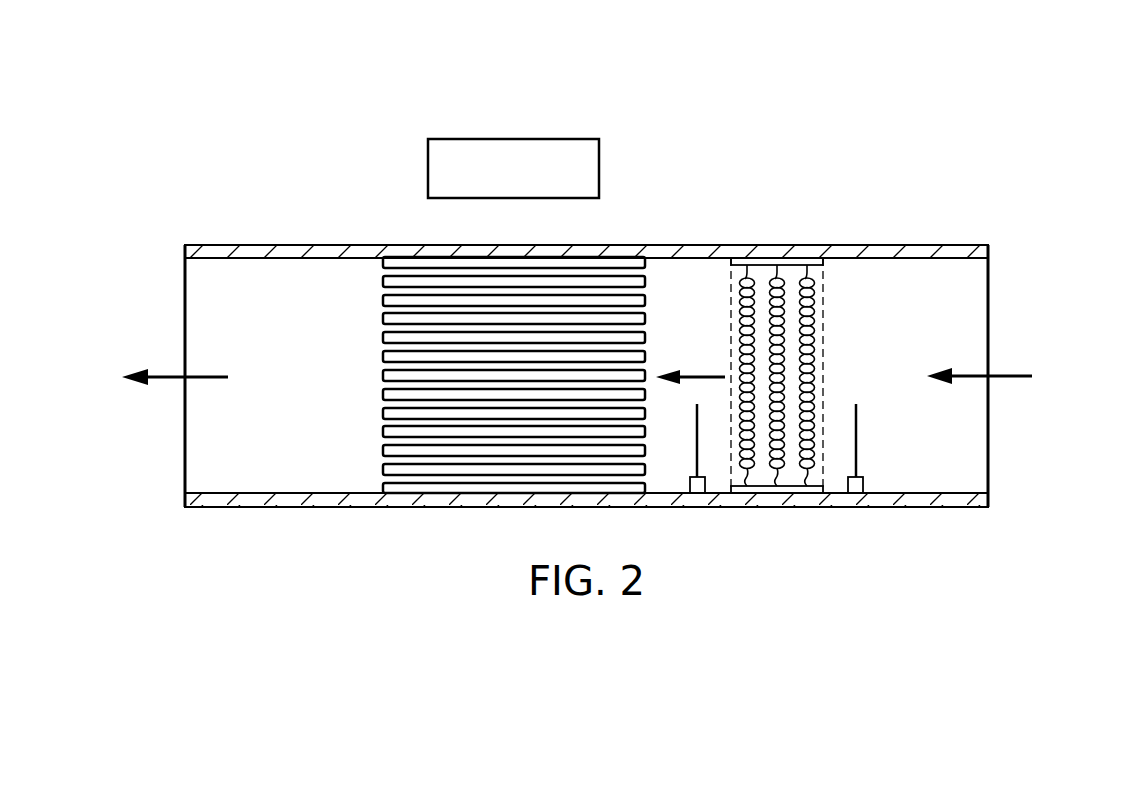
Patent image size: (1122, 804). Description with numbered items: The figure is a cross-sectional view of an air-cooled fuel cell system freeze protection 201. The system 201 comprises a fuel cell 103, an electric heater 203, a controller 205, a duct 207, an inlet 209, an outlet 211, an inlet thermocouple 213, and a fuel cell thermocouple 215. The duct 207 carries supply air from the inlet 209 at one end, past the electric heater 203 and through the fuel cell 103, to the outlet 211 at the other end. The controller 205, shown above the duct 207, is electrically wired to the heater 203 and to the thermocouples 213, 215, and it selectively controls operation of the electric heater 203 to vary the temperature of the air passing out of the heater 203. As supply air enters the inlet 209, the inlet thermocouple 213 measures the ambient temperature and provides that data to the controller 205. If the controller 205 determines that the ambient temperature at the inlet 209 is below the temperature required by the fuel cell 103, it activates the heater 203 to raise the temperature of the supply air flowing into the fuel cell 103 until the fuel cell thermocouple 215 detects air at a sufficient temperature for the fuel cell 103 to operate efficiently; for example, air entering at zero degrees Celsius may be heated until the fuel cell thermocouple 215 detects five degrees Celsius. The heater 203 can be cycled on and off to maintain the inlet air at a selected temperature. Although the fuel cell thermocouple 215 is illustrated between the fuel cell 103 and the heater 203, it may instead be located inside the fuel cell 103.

The air-cooled fuel cell system freeze protection 201 is at (280, 84).
The fuel cell 103 is at (382, 337).
The electric heater 203 is at (825, 312).
The controller 205 is at (428, 166).
The duct 207 is at (245, 253).
The inlet 209 is at (1018, 452).
The outlet 211 is at (160, 303).
The inlet thermocouple 213 is at (866, 485).
The fuel cell thermocouple 215 is at (690, 485).